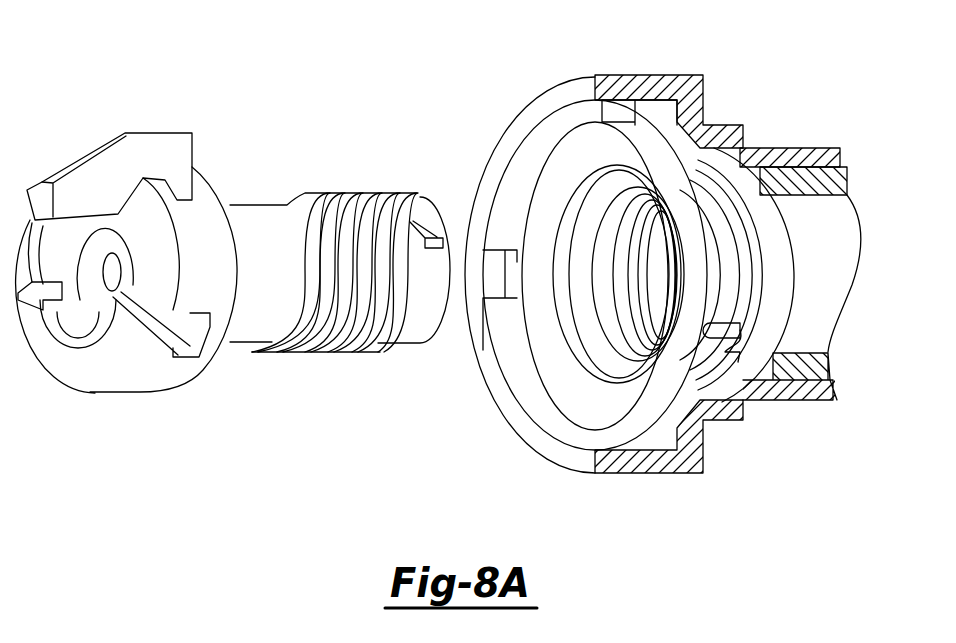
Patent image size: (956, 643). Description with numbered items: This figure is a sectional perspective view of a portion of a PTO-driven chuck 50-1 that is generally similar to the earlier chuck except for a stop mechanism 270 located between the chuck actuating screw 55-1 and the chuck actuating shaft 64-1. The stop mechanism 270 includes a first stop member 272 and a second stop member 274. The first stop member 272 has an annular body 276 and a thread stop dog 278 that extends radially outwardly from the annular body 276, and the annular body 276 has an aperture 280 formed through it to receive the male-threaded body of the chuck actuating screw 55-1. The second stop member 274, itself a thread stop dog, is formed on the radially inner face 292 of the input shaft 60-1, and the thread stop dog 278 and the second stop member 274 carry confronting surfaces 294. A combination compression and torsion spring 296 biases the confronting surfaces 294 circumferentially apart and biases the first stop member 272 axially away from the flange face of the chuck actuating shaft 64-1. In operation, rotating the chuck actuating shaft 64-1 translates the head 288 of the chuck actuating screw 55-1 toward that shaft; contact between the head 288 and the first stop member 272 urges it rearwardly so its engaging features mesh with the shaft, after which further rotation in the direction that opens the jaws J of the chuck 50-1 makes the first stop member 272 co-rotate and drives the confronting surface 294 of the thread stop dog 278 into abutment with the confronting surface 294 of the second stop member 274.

The PTO-driven chuck 50-1 is at (708, 58).
The chuck actuating screw 55-1 is at (147, 383).
The input shaft 60-1 is at (835, 153).
The chuck actuating shaft 64-1 is at (817, 367).
The stop mechanism 270 is at (633, 440).
The first stop member 272 is at (568, 395).
The second stop member 274 is at (490, 262).
The annular body 276 is at (725, 230).
The thread stop dog 278 is at (638, 110).
The aperture 280 is at (602, 298).
The head 288 is at (215, 260).
The radially inner face 292 is at (525, 160).
The confronting surfaces 294 is at (595, 108).
The combination compression and torsion spring 296 is at (723, 330).
The jaws J is at (145, 143).